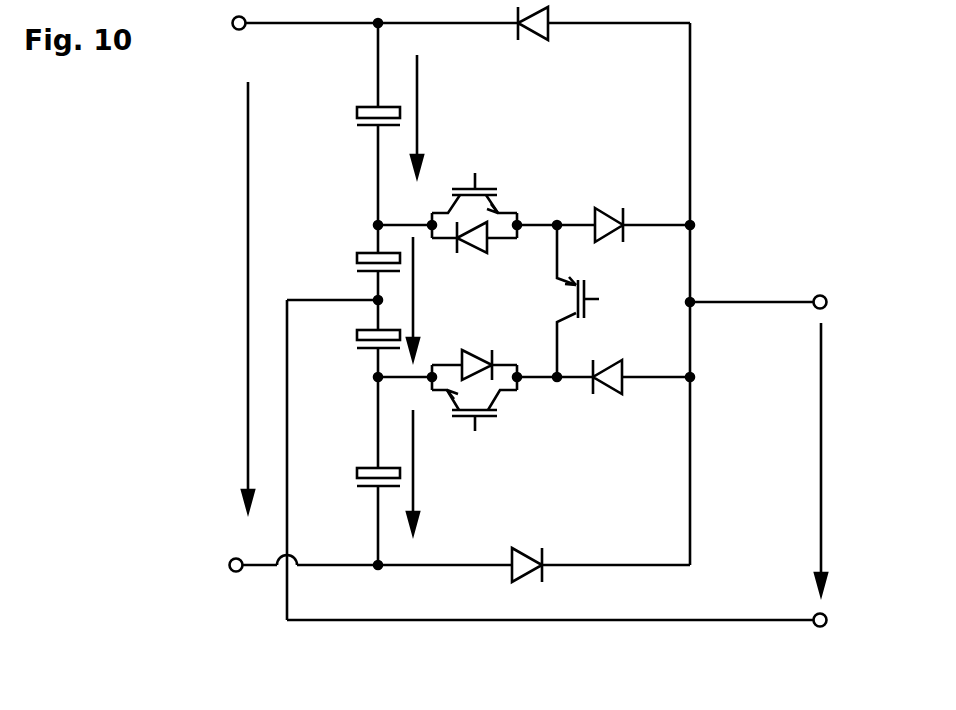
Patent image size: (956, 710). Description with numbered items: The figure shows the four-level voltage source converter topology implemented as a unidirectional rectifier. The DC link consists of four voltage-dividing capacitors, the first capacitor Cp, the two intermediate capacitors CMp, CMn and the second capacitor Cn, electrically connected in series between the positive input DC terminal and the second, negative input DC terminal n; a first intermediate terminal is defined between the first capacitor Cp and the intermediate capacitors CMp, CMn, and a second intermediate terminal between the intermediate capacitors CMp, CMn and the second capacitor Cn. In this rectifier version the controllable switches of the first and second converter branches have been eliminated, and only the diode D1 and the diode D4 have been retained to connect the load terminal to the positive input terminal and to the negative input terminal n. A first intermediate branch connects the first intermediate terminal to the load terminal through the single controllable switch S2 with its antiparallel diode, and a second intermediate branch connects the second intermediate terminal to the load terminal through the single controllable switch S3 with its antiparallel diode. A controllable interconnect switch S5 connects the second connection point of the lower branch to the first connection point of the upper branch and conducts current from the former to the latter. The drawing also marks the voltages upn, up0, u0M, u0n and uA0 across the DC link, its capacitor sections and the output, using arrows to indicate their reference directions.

The first diode D1 is at (603, 44).
The diode D4 is at (493, 549).
The controllable switch S2 is at (474, 197).
The controllable switch S3 is at (474, 413).
The controllable interconnect switch S5 is at (595, 301).
The first capacitor Cp is at (357, 121).
The intermediate capacitor CMp is at (349, 266).
The intermediate capacitor CMn is at (348, 342).
The second capacitor Cn is at (358, 479).
The second input DC terminal n is at (252, 565).
The voltage upn is at (221, 297).
The voltage up0 is at (441, 116).
The voltage u0M is at (441, 298).
The voltage u0n is at (438, 472).
The output voltage uA0 is at (794, 459).